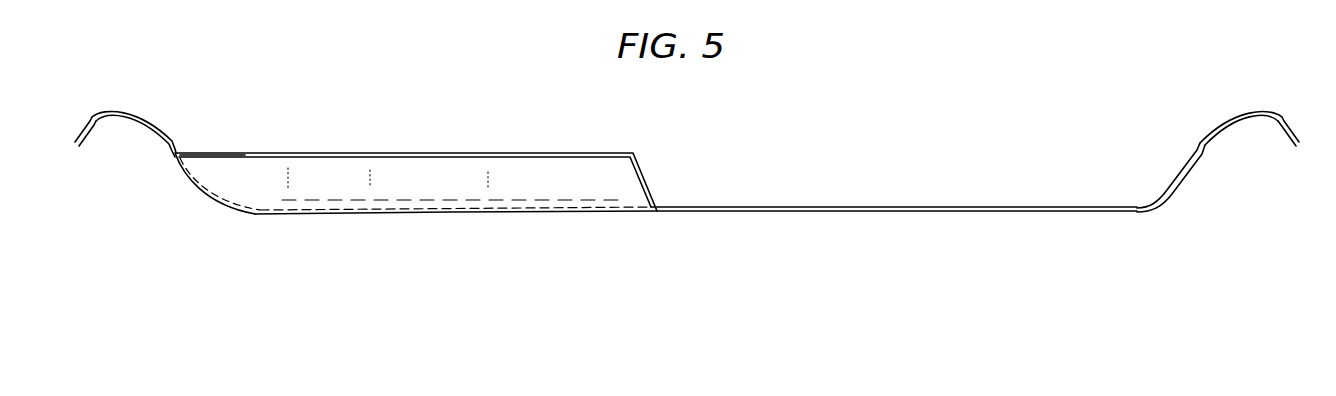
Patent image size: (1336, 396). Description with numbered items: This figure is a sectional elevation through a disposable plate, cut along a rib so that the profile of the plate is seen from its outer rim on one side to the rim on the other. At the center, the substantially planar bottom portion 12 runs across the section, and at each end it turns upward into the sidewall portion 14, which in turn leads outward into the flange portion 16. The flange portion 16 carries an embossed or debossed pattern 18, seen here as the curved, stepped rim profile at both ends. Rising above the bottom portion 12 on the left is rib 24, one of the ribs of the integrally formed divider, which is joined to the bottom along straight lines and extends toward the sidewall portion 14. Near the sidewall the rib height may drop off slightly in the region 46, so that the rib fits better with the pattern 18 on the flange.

The bottom portion 12 is at (838, 211).
The sidewall portion 14 is at (178, 170).
The flange portion 16 is at (86, 128).
The embossed or debossed pattern 18 is at (106, 114).
The rib 24 is at (425, 153).
The drop off region 46 is at (224, 160).